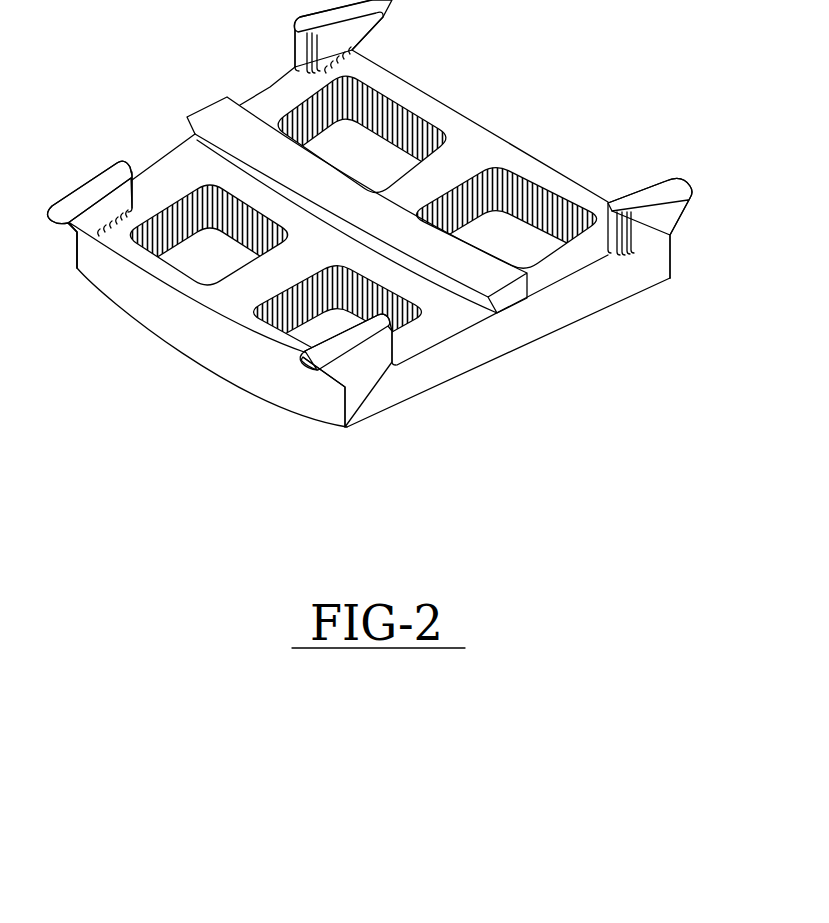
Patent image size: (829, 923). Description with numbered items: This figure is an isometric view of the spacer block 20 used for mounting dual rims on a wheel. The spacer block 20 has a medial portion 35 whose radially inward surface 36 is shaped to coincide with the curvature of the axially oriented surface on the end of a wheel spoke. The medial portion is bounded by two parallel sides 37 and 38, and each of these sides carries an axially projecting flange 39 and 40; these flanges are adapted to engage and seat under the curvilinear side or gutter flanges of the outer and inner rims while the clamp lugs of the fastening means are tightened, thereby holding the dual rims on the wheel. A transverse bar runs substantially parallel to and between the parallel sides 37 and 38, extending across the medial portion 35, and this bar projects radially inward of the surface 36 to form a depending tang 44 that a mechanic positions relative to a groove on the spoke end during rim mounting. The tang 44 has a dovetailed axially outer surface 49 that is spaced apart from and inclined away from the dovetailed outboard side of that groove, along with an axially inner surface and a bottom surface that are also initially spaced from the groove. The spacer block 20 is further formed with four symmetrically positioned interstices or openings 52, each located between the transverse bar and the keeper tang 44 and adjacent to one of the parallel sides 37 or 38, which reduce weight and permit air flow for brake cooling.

The spacer block 20 is at (376, 235).
The medial portion 35 is at (273, 82).
The radially inward surface 36 is at (147, 195).
The parallel side 37 is at (203, 327).
The parallel side 38 is at (547, 167).
The axially projecting flange 39 is at (358, 24).
The axially projecting flange 40 is at (63, 213).
The tang 44 is at (513, 308).
The dovetailed axially outer surface 49 is at (193, 128).
The opening 52 is at (338, 159).